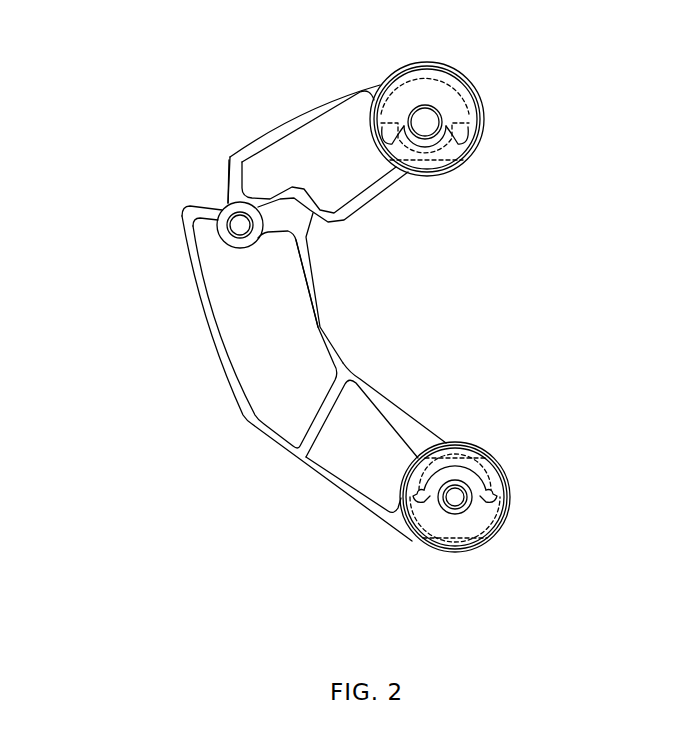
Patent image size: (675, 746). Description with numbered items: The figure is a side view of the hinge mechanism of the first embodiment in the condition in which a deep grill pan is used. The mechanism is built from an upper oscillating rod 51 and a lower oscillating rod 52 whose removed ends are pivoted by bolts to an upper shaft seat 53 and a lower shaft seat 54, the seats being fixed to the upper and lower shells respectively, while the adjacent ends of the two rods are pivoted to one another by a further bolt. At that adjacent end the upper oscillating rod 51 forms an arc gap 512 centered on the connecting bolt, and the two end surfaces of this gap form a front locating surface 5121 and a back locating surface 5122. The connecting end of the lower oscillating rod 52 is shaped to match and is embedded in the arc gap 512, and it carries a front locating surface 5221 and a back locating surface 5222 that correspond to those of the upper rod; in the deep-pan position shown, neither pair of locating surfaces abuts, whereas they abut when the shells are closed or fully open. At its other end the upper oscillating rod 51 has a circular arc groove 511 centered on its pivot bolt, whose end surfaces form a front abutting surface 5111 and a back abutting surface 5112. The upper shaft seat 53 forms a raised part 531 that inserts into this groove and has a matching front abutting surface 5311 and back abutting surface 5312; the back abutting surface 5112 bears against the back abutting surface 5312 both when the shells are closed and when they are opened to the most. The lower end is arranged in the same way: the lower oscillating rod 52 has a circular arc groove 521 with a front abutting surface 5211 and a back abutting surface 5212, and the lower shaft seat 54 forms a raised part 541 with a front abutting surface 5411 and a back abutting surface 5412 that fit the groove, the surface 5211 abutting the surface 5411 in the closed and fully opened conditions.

The upper oscillating rod 51 is at (300, 110).
The circular arc groove 511 is at (467, 127).
The front abutting surface 5111 is at (467, 150).
The back abutting surface 5112 is at (372, 130).
The arc gap 512 is at (207, 194).
The front locating surface 5121 is at (313, 240).
The back locating surface 5122 is at (223, 179).
The lower oscillating rod 52 is at (247, 418).
The circular arc groove 521 is at (497, 490).
The front abutting surface 5211 is at (497, 460).
The back abutting surface 5212 is at (428, 458).
The front locating surface 5221 is at (310, 247).
The back locating surface 5222 is at (232, 160).
The upper shaft seat 53 is at (427, 160).
The raised part 531 is at (467, 80).
The front abutting surface 5311 is at (472, 96).
The back abutting surface 5312 is at (378, 88).
The lower shaft seat 54 is at (462, 442).
The raised part 541 is at (423, 540).
The front abutting surface 5411 is at (502, 532).
The back abutting surface 5412 is at (440, 518).